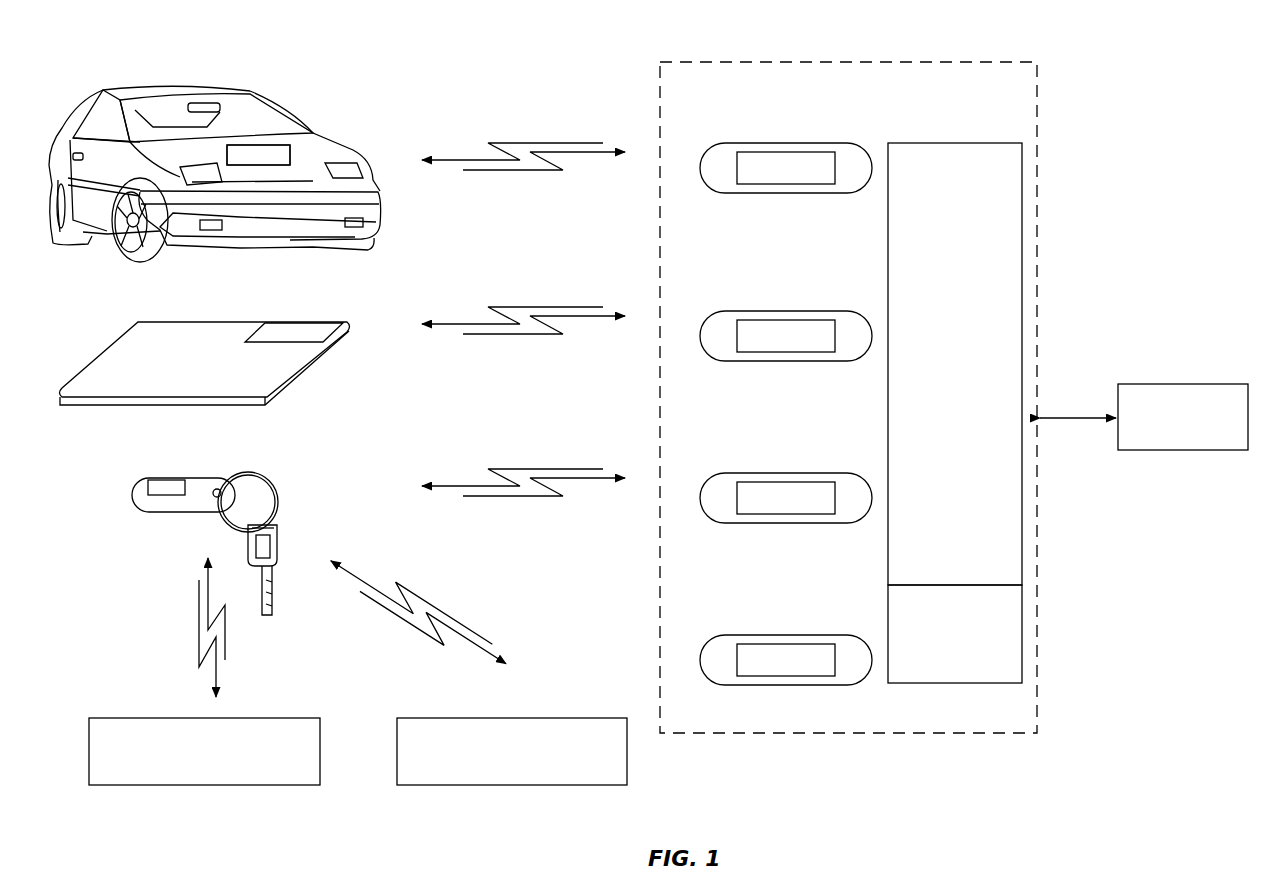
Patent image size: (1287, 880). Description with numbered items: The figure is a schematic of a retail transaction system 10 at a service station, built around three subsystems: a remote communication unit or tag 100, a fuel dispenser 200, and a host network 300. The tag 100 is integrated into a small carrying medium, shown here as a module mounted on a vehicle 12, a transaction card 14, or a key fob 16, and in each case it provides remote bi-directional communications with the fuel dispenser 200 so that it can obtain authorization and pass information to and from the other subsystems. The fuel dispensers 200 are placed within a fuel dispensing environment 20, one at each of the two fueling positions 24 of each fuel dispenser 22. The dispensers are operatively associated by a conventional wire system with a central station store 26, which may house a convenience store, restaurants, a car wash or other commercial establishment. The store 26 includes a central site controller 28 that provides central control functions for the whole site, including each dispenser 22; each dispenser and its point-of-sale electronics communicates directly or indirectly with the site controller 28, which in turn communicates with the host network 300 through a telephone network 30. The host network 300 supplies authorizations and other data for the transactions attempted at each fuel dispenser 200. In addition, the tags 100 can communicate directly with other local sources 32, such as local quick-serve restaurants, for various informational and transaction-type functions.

The retail transaction system 10 is at (542, 80).
The vehicle 12 is at (90, 130).
The transaction card 14 is at (115, 342).
The key fob 16 is at (138, 481).
The fuel dispensing environment 20 is at (965, 62).
The fuel dispenser 22 is at (793, 128).
The fueling position 24 is at (735, 143).
The central station store 26 is at (952, 143).
The central site controller 28 is at (960, 683).
The telephone network 30 is at (1087, 422).
The local sources 32 is at (155, 718).
The remote communication unit 100 is at (273, 155).
The fuel dispenser 200 is at (786, 414).
The host network 300 is at (1178, 362).